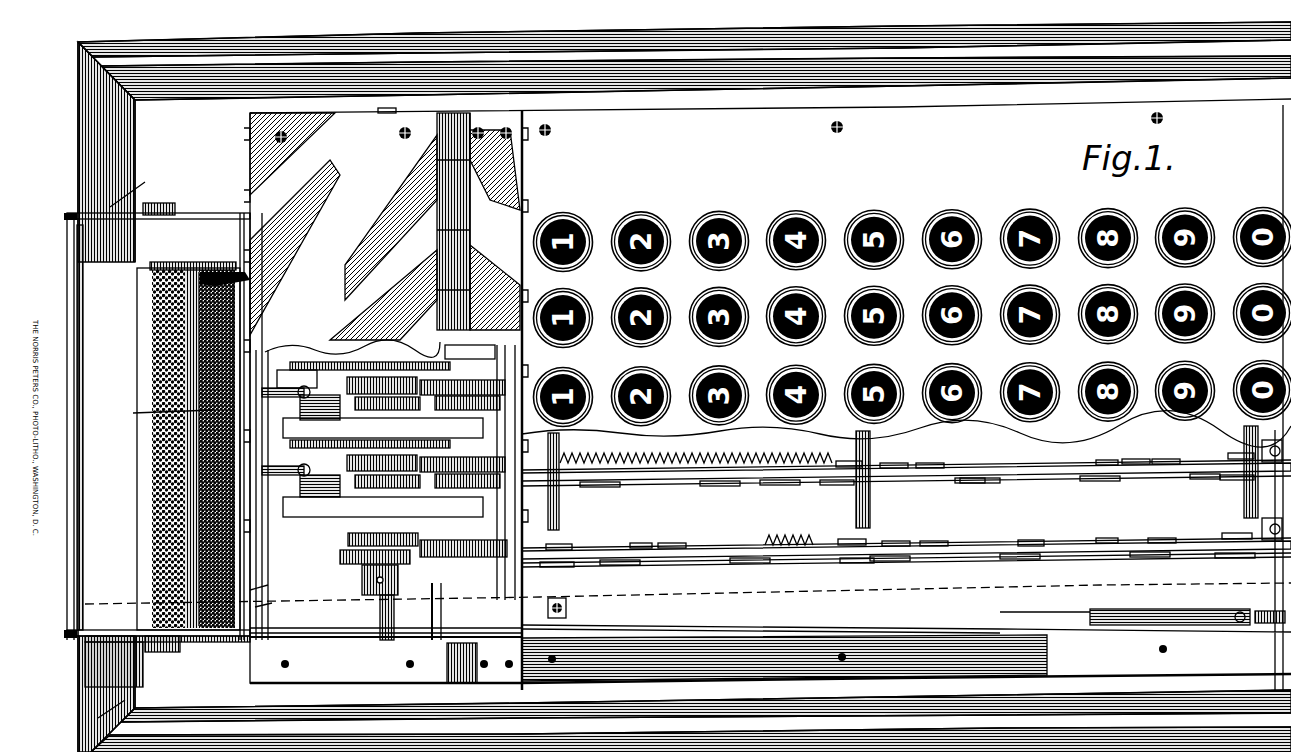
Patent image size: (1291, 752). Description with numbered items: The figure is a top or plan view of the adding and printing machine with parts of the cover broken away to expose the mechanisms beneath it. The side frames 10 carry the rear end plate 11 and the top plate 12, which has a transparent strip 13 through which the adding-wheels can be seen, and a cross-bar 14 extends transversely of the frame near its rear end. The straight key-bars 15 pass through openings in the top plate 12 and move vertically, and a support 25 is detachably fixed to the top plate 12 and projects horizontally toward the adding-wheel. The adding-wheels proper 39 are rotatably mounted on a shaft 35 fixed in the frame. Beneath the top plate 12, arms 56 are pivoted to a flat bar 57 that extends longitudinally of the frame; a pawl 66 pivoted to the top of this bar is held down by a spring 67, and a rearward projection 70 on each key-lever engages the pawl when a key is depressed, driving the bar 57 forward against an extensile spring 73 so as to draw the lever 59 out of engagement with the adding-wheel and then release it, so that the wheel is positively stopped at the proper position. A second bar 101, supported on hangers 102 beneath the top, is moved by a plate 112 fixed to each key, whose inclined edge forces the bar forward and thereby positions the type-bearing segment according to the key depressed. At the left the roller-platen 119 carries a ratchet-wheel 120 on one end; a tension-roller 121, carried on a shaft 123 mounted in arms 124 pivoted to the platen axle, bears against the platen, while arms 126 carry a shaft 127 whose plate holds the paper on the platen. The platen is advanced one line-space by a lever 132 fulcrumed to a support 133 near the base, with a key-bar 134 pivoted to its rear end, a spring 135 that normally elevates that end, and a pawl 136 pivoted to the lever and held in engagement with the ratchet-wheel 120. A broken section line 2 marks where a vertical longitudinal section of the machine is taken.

The section line 2 is at (688, 597).
The side frames 10 is at (684, 387).
The rear end plate 11 is at (275, 601).
The top plate 12 is at (703, 400).
The transparent strip 13 is at (440, 240).
The cross-bar 14 is at (397, 622).
The key-bar 15 is at (643, 548).
The support 25 is at (530, 355).
The shaft 35 is at (385, 114).
The adding-wheel 39 is at (325, 522).
The arms 56 is at (842, 461).
The flat bar 57 is at (1030, 546).
The lever 59 is at (293, 500).
The pawl 66 is at (893, 464).
The spring 67 is at (929, 464).
The rearward projection 70 is at (968, 470).
The extensile spring 73 is at (640, 450).
The bar 101 is at (1075, 476).
The hangers 102 is at (845, 479).
The plate 112 is at (670, 478).
The roller-platen 119 is at (166, 449).
The ratchet-wheel 120 is at (200, 686).
The tension-roller 121 is at (156, 415).
The shaft 123 is at (276, 583).
The arms 124 is at (222, 211).
The arms 126 is at (137, 444).
The shaft 127 is at (80, 313).
The lever 132 is at (863, 626).
The support 133 is at (578, 609).
The key-bar 134 is at (1260, 612).
The spring 135 is at (1170, 612).
The pawl 136 is at (202, 634).